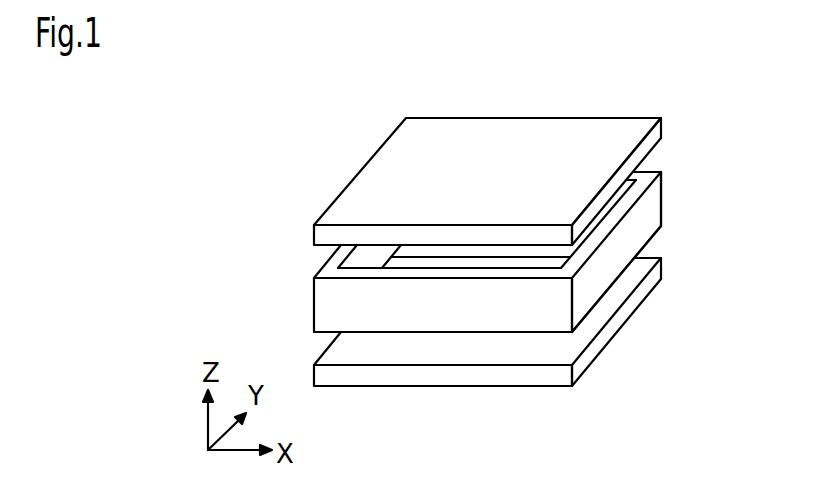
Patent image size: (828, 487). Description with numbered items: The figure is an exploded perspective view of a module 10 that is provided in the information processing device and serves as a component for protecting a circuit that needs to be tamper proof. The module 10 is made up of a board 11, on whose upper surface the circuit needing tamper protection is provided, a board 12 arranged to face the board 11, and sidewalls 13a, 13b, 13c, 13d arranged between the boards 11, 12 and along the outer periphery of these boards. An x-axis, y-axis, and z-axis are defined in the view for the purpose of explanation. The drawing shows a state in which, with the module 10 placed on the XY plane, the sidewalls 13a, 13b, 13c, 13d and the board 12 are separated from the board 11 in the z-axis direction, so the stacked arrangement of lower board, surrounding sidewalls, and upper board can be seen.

The module 10 is at (532, 463).
The board 11 is at (623, 318).
The board 12 is at (523, 128).
The sidewall 13a is at (322, 300).
The sidewall 13b is at (327, 266).
The sidewall 13c is at (650, 167).
The sidewall 13d is at (657, 207).